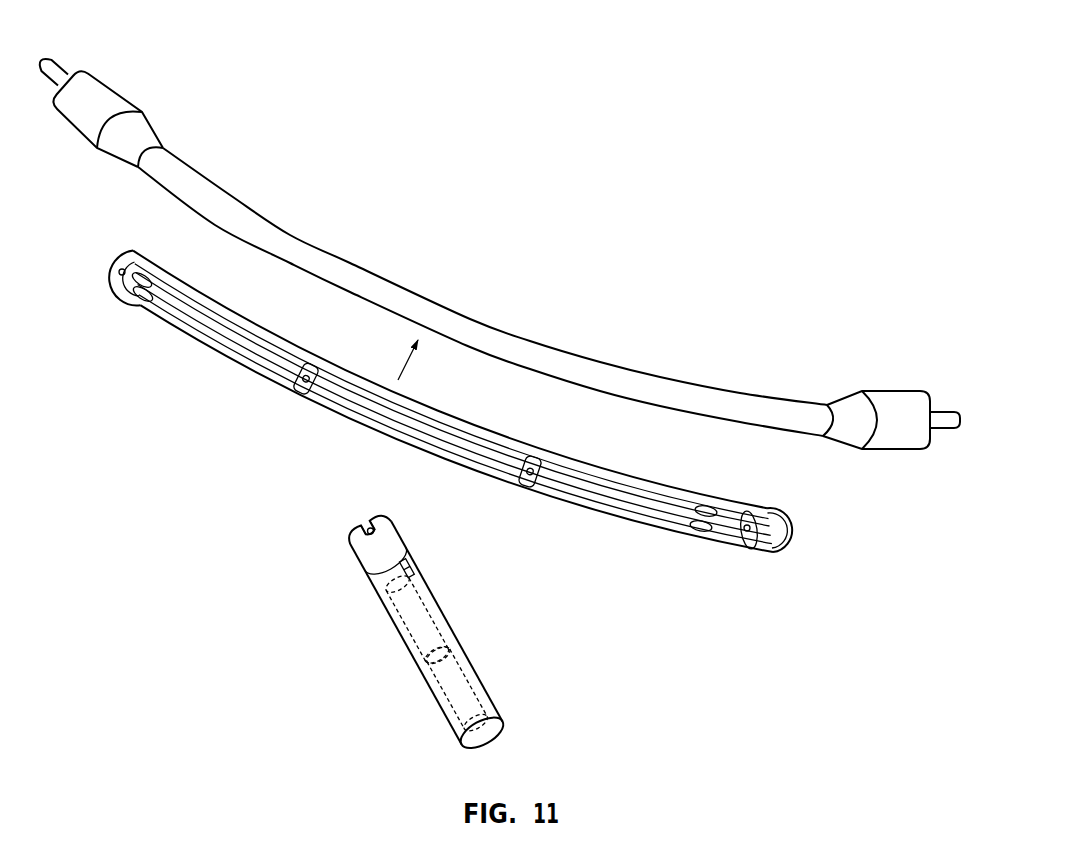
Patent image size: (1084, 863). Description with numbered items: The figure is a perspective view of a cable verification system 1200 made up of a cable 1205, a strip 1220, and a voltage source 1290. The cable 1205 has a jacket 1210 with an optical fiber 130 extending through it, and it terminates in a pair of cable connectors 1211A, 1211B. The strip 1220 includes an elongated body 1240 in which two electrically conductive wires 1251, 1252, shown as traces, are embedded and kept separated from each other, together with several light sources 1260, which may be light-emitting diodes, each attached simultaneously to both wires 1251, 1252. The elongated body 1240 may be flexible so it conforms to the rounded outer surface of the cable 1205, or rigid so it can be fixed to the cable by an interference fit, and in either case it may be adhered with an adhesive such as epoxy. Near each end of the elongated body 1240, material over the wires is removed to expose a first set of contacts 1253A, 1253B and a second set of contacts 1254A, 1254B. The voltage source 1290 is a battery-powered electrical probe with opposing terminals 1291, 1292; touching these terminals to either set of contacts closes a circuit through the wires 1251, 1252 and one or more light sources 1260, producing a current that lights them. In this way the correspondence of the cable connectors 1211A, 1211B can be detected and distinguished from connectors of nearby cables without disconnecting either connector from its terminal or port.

The cable verification system 1200 is at (670, 133).
The cable 1205 is at (683, 350).
The jacket 1210 is at (195, 185).
The cable connector 1211A is at (912, 382).
The cable connector 1211B is at (127, 83).
The optical fiber 130 is at (56, 68).
The strip 1220 is at (783, 518).
The elongated body 1240 is at (332, 392).
The electrically conductive wire 1251 is at (190, 325).
The electrically conductive wire 1252 is at (245, 338).
The contact of first set 1253A is at (140, 302).
The contact of first set 1253B is at (152, 280).
The contact of second set 1254A is at (702, 530).
The contact of second set 1254B is at (708, 505).
The light source 1260 is at (530, 500).
The voltage source 1290 is at (493, 678).
The terminal 1291 is at (362, 535).
The terminal 1292 is at (371, 528).